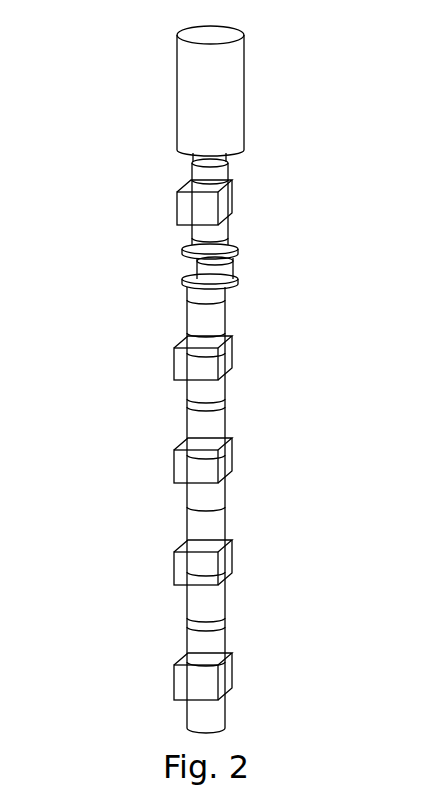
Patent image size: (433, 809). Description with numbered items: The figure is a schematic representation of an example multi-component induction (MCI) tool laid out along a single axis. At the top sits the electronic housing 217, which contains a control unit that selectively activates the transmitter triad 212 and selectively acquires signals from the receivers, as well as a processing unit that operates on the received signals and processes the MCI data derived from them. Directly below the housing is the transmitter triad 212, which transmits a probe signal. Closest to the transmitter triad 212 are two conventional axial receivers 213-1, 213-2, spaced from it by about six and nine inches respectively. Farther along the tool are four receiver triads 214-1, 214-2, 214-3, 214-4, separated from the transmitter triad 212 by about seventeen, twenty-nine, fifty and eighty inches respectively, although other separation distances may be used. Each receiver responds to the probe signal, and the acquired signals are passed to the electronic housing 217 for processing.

The electronic housing 217 is at (244, 113).
The transmitter triad 212 is at (177, 194).
The conventional axial receiver 213-1 is at (181, 249).
The conventional axial receiver 213-2 is at (182, 278).
The first receiver triad 214-1 is at (175, 353).
The second receiver triad 214-2 is at (173, 451).
The third receiver triad 214-3 is at (173, 571).
The fourth receiver triad 214-4 is at (175, 683).